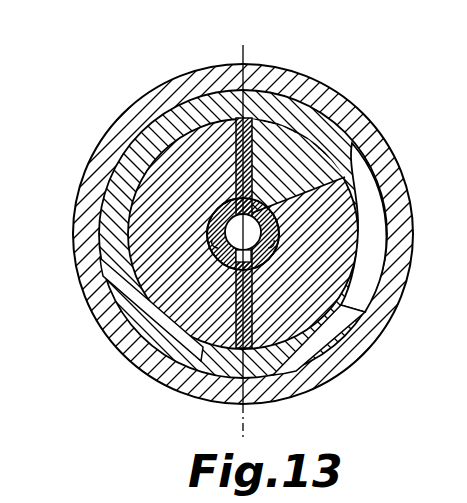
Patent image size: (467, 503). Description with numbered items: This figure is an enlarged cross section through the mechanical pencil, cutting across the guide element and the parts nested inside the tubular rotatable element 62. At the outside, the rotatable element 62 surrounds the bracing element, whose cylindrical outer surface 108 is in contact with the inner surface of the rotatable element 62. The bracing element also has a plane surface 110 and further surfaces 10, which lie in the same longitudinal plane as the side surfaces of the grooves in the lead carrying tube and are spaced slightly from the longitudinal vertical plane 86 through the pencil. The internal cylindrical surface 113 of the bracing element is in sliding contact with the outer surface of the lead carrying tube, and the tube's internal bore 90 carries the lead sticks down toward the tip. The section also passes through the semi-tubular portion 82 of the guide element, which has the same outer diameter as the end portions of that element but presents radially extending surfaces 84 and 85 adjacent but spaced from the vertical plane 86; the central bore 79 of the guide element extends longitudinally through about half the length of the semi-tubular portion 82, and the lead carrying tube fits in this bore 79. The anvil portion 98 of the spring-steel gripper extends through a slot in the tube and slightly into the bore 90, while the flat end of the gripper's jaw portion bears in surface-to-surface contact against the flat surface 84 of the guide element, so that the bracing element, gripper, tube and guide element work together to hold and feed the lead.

The rotatable element 62 is at (140, 136).
The radially extending surface 84 is at (262, 90).
The anvil portion 98 is at (150, 134).
The cylindrical outer surface 108 is at (146, 172).
The plane surface 110 is at (337, 120).
The bore 90 is at (347, 177).
The semi-tubular portion 82 is at (357, 262).
The radially extending surface 85 is at (172, 387).
The central bore 79 is at (275, 243).
The internal cylindrical surface 113 is at (210, 252).
The longitudinal vertical plane 86 is at (242, 430).
The surfaces 10 is at (459, 350).